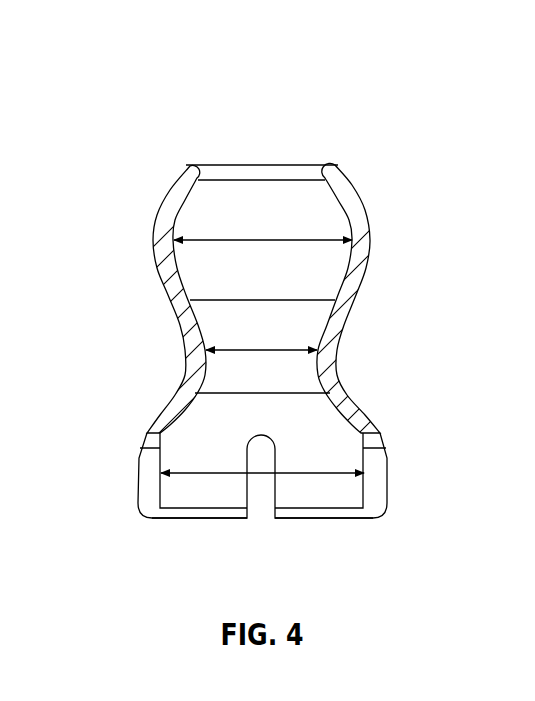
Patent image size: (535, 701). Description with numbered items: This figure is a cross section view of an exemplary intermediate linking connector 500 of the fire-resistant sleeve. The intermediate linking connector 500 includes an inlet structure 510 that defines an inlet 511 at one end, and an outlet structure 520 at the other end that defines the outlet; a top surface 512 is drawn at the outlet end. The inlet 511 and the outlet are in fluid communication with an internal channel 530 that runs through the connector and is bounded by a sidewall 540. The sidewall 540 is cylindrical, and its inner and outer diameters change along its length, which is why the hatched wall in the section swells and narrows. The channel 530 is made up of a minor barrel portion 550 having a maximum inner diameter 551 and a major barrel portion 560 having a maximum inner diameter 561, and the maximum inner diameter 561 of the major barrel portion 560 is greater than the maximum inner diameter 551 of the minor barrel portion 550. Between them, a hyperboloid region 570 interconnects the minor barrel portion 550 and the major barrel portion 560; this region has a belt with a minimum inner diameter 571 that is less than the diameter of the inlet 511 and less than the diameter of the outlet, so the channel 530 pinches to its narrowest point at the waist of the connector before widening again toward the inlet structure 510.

The intermediate linking connector 500 is at (122, 44).
The inlet structure 510 is at (132, 450).
The inlet 511 is at (194, 521).
The top surface 512 is at (300, 165).
The outlet structure 520 is at (148, 171).
The internal channel 530 is at (285, 287).
The sidewall 540 is at (158, 265).
The minor barrel portion 550 is at (382, 165).
The maximum inner diameter 551 is at (263, 238).
The major barrel portion 560 is at (382, 398).
The maximum inner diameter 561 is at (298, 478).
The hyperboloid region 570 is at (382, 305).
The minimum inner diameter 571 is at (268, 352).